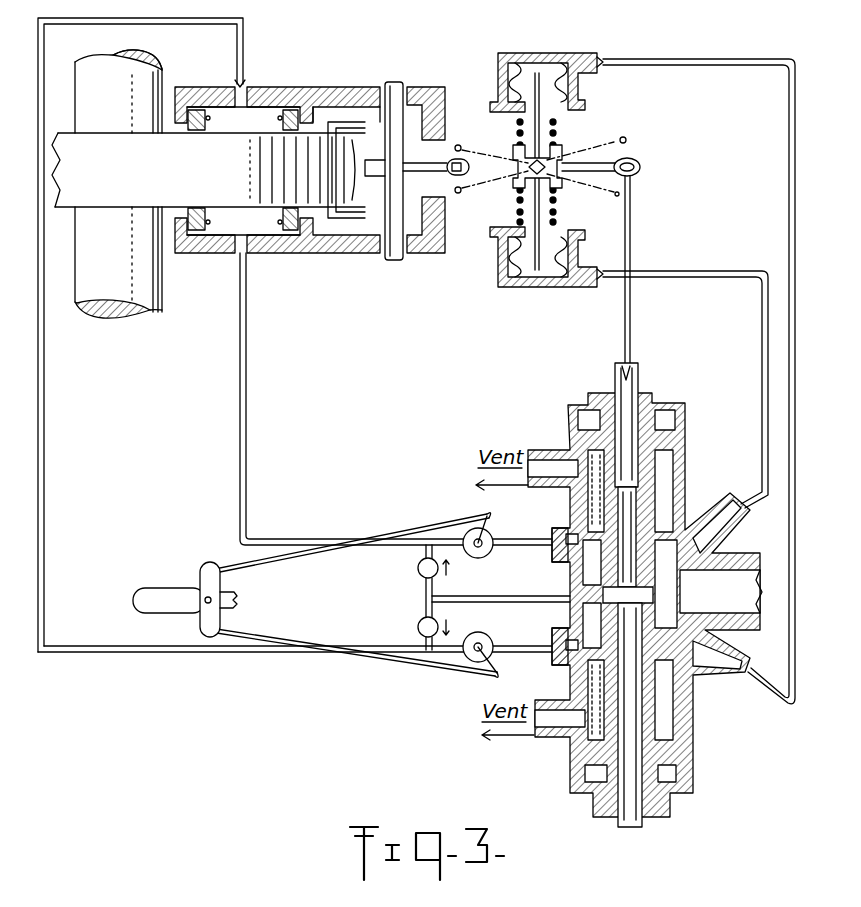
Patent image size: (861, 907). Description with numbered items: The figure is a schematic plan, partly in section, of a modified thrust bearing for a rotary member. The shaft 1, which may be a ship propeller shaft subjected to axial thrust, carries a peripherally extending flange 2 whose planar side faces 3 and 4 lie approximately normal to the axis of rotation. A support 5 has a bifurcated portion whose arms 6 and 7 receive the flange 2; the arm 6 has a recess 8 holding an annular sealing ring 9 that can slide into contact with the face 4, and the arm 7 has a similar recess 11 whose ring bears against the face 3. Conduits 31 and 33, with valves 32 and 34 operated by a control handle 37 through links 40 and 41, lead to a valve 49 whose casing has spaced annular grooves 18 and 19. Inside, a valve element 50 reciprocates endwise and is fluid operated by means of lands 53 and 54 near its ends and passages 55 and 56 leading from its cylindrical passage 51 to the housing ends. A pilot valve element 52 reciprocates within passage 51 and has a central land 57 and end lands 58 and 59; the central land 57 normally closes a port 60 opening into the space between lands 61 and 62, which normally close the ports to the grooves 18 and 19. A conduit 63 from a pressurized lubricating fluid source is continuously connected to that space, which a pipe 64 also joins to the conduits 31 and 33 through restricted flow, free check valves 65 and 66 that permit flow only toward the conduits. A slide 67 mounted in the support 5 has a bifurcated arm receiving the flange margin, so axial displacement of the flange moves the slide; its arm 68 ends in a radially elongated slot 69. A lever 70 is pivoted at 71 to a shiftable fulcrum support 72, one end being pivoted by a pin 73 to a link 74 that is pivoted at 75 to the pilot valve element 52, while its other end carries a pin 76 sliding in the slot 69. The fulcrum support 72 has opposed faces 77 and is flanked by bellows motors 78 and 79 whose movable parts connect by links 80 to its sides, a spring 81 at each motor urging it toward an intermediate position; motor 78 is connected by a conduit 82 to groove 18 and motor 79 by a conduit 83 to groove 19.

The shaft 1 is at (148, 312).
The flange 2 is at (114, 180).
The side face 3 is at (215, 232).
The side face 4 is at (200, 112).
The support 5 is at (425, 87).
The arm 6 is at (340, 88).
The arm 7 is at (355, 254).
The recess 8 is at (265, 112).
The annular ring 9 is at (205, 128).
The recess 11 is at (275, 234).
The annular groove 18 is at (562, 630).
The annular groove 19 is at (562, 566).
The conduit 31 is at (248, 380).
The valve 32 is at (492, 550).
The conduit 33 is at (44, 440).
The valve 34 is at (485, 635).
The control handle 37 is at (165, 592).
The link 40 is at (410, 668).
The link 41 is at (396, 540).
The valve 49 is at (712, 502).
The valve element 50 is at (660, 472).
The cylindrical passage 51 is at (672, 509).
The pilot valve element 52 is at (636, 363).
The land 53 is at (692, 760).
The land 54 is at (668, 420).
The passage 55 is at (590, 498).
The passage 56 is at (586, 682).
The central land 57 is at (655, 592).
The end land 58 is at (630, 805).
The end land 59 is at (615, 386).
The port 60 is at (604, 596).
The land 61 is at (560, 530).
The land 62 is at (560, 660).
The conduit 63 is at (746, 602).
The pipe 64 is at (470, 596).
The check valve 65 is at (418, 628).
The check valve 66 is at (418, 568).
The slide 67 is at (394, 82).
The arm 68 is at (428, 164).
The slot 69 is at (464, 150).
The lever 70 is at (630, 112).
The pivot 71 is at (548, 160).
The fulcrum support 72 is at (515, 176).
The pin 73 is at (640, 164).
The link 74 is at (632, 254).
The pivot 75 is at (632, 380).
The pin 76 is at (462, 176).
The opposed faces 77 is at (556, 124).
The bellows motor 78 is at (545, 70).
The bellows motor 79 is at (548, 277).
The link 80 is at (518, 80).
The spring 81 is at (560, 112).
The conduit 82 is at (598, 52).
The conduit 83 is at (592, 288).